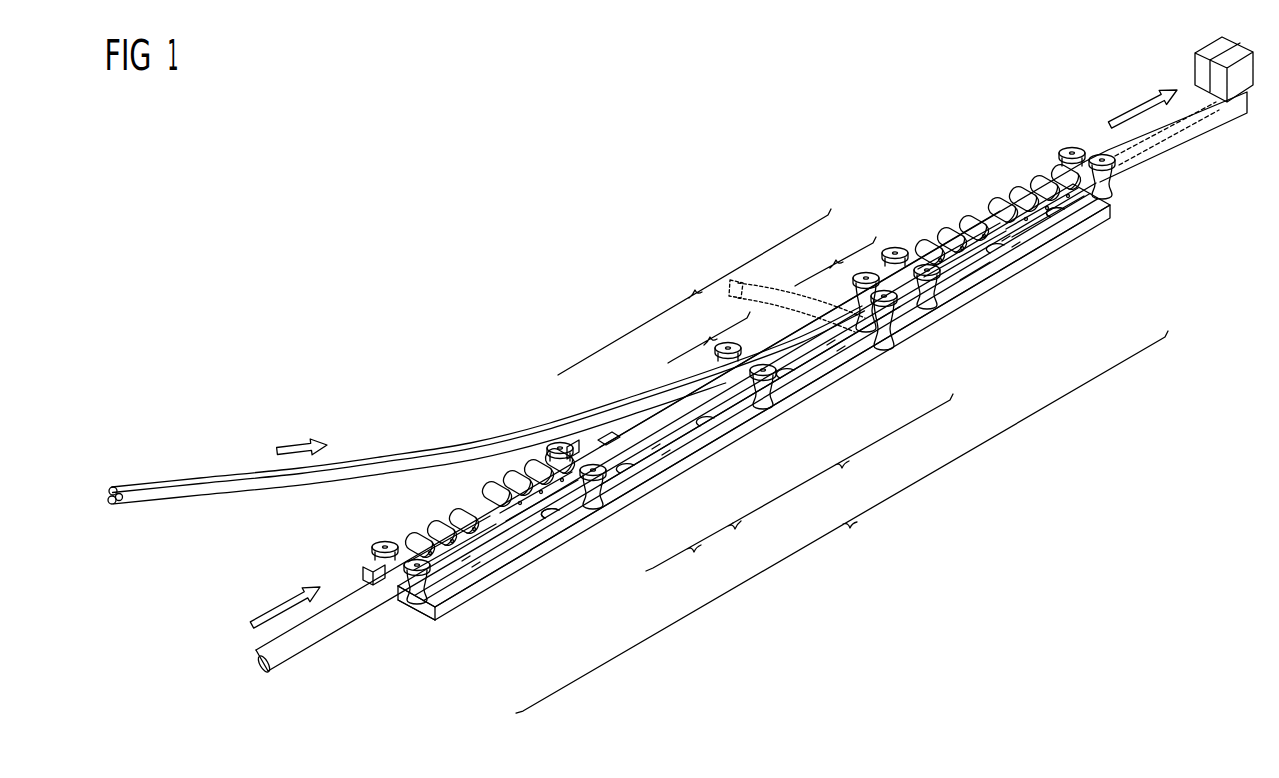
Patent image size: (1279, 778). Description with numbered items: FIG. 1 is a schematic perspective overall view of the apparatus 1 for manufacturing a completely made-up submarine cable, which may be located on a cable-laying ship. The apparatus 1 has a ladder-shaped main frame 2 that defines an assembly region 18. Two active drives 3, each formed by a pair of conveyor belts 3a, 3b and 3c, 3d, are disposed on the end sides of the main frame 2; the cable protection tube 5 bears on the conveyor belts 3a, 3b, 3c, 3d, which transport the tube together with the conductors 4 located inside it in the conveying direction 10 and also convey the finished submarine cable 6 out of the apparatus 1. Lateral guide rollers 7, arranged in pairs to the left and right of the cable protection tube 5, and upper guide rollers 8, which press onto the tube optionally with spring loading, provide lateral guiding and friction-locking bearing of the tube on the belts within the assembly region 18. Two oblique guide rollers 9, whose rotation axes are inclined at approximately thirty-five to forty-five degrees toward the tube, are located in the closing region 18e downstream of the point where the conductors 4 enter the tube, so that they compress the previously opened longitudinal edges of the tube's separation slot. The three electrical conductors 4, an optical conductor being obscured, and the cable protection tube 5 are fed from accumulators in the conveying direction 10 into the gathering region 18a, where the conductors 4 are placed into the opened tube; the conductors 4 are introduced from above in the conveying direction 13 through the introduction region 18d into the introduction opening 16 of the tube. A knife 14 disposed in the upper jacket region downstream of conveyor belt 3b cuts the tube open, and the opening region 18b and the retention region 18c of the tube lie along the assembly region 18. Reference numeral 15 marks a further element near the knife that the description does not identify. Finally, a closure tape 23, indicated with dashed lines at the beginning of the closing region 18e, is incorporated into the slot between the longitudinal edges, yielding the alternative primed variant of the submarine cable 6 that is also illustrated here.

The apparatus 1 is at (750, 190).
The main frame 2 is at (743, 433).
The active drives 3 is at (540, 589).
The conveyor belt 3a is at (457, 577).
The conveyor belt 3b is at (552, 523).
The conveyor belt 3c is at (973, 278).
The conveyor belt 3d is at (1058, 230).
The conductors 4 is at (208, 460).
The cable protection tube 5 is at (313, 635).
The completely made-up submarine cable 6 is at (1158, 147).
The lateral guide rollers 7 is at (383, 543).
The upper guide rollers 8 is at (493, 495).
The oblique guide rollers 9 is at (866, 275).
The conveying direction 10 is at (277, 603).
The conveying direction 13 is at (297, 444).
The knife 14 is at (575, 443).
The guide element 15 is at (603, 430).
The introduction opening 16 is at (663, 430).
The assembly region 18 is at (842, 522).
The gathering region 18a is at (694, 292).
The opening region 18b is at (693, 550).
The retention region 18c is at (843, 458).
The introduction region 18d is at (708, 336).
The closing region 18e is at (832, 261).
The closure tape 23 is at (1197, 115).